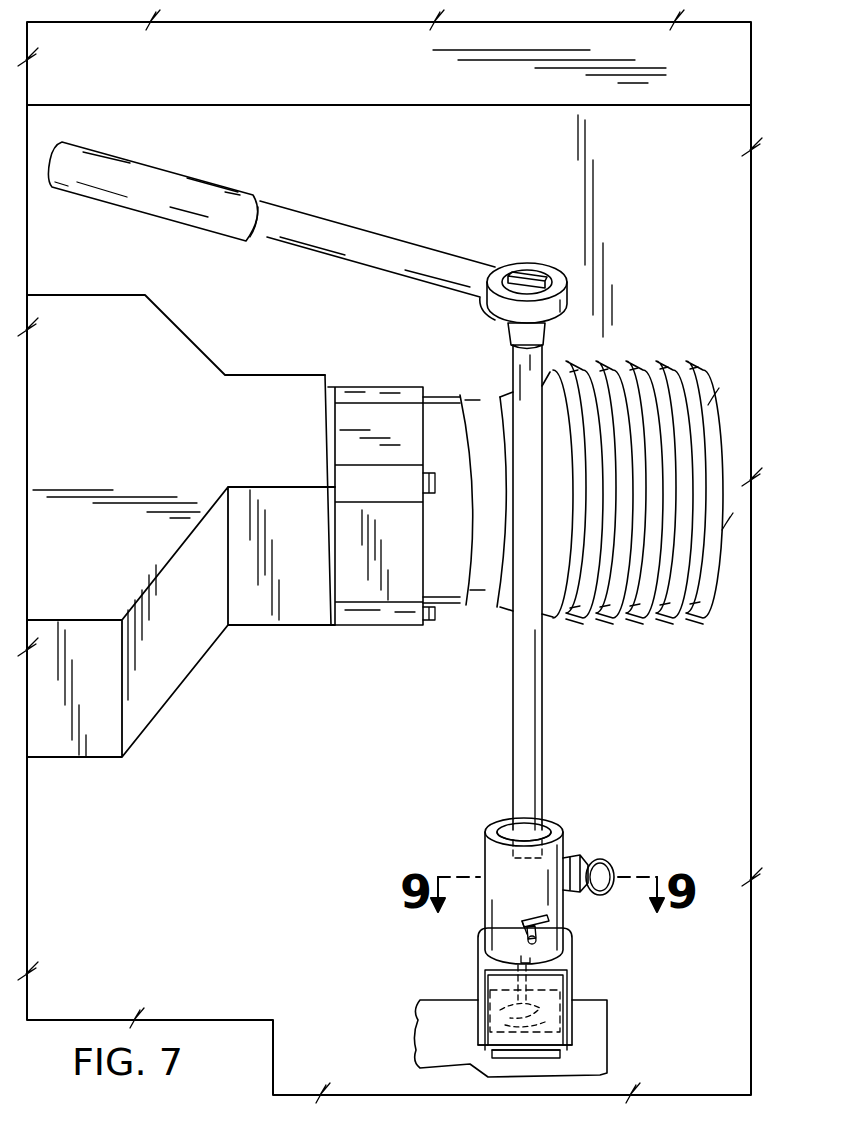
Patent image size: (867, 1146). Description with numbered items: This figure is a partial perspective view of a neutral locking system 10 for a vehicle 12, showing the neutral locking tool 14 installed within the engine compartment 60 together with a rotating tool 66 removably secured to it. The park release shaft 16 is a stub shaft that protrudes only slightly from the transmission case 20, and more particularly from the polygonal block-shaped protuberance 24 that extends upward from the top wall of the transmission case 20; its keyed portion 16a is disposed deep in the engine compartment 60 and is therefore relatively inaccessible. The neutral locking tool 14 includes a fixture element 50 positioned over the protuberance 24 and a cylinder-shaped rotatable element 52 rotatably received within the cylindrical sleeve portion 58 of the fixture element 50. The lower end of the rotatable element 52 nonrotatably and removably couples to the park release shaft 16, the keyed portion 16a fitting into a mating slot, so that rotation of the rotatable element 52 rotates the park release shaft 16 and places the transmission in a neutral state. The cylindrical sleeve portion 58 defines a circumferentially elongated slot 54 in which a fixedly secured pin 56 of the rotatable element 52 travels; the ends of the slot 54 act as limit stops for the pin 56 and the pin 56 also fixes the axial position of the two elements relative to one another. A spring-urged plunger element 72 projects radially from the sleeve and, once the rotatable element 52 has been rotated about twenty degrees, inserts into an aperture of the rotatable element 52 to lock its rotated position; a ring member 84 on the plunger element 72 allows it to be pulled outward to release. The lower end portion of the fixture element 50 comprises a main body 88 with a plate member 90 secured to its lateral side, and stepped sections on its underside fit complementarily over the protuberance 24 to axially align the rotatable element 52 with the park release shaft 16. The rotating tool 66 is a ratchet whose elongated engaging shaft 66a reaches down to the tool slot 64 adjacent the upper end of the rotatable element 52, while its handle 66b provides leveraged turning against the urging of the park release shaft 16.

The vehicle 12 is at (778, 82).
The engine compartment 60 is at (720, 232).
The rotating tool 66 is at (438, 238).
The handle 66b is at (182, 186).
The elongated engaging shaft 66a is at (531, 683).
The neutral locking system 10 is at (434, 814).
The neutral locking tool 14 is at (466, 860).
The cylindrical sleeve portion 58 is at (483, 837).
The rotatable element 52 is at (556, 818).
The tool slot 64 is at (541, 822).
The plunger element 72 is at (602, 855).
The ring member 84 is at (615, 870).
The circumferentially elongated slot 54 is at (549, 919).
The fixedly secured pin 56 is at (523, 930).
The fixture element 50 is at (470, 951).
The main body 88 is at (567, 962).
The park release shaft 16 is at (493, 1002).
The keyed portion 16a is at (540, 984).
The transmission case 20 is at (597, 1058).
The plate member 90 is at (502, 1040).
The protuberance 24 is at (520, 1055).